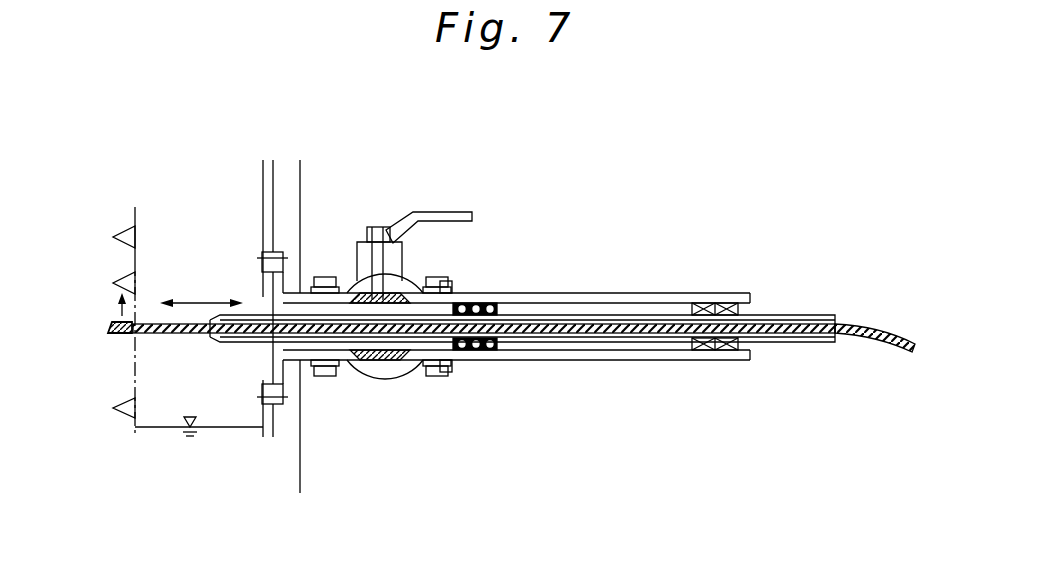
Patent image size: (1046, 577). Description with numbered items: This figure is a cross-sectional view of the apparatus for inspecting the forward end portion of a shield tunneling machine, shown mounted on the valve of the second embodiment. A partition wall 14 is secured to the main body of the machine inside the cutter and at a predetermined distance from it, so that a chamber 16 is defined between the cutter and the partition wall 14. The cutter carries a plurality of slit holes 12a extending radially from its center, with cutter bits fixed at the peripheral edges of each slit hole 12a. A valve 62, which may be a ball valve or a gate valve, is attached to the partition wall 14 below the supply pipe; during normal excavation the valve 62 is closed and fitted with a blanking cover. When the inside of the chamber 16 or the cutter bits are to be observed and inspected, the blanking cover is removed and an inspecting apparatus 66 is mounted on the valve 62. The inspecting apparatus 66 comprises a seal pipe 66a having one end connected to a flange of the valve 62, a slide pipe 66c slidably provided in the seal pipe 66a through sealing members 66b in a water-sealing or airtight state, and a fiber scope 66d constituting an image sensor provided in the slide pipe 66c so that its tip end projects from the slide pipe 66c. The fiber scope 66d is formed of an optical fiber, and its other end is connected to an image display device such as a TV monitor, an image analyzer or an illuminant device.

The partition wall 14 is at (275, 163).
The chamber 16 is at (222, 210).
The slit hole 12a is at (131, 236).
The valve 62 is at (356, 258).
The inspecting apparatus 66 is at (586, 291).
The seal pipe 66a is at (673, 299).
The sealing members 66b is at (485, 306).
The slide pipe 66c is at (577, 345).
The fiber scope 66d is at (112, 331).